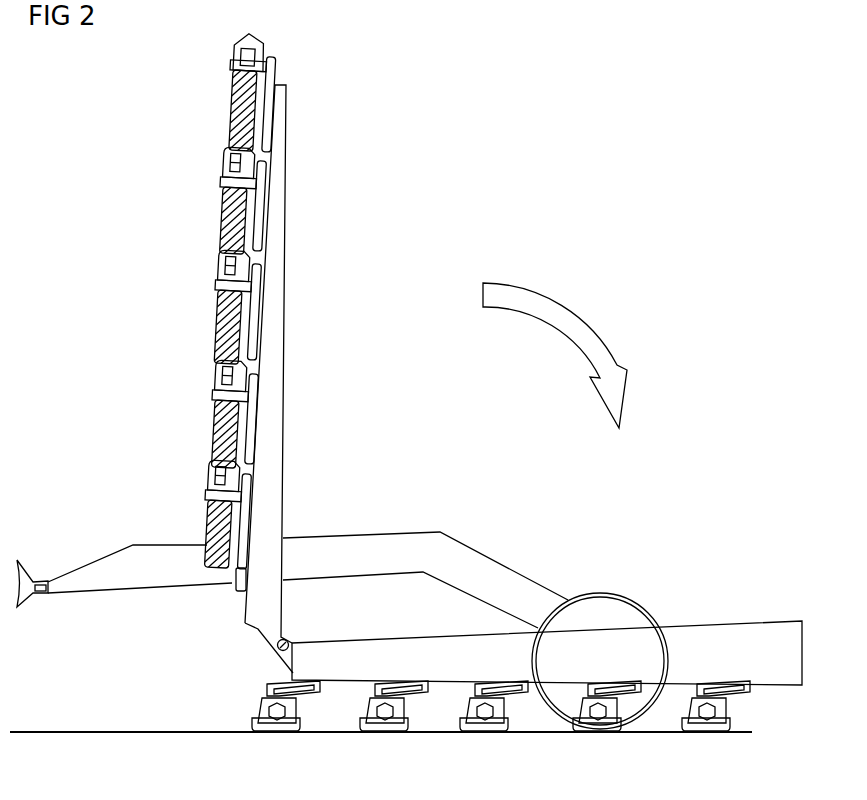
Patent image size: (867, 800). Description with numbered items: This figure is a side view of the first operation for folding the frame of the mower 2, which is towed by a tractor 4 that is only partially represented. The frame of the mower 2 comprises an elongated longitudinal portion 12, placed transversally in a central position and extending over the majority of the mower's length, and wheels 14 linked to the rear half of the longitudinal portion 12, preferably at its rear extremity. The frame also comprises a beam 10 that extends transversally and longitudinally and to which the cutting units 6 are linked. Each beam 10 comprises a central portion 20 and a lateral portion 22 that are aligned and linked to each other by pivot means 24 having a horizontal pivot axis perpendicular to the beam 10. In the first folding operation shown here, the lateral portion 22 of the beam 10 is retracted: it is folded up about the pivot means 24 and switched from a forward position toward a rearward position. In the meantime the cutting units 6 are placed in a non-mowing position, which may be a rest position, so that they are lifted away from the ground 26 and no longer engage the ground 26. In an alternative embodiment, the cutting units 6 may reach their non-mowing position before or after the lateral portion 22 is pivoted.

The mower 2 is at (603, 188).
The tractor 4 is at (18, 560).
The cutting units 6 is at (272, 727).
The beam 10 is at (156, 425).
The longitudinal portion 12 is at (374, 545).
The wheels 14 is at (602, 598).
The central portion 20 is at (723, 640).
The lateral portion 22 is at (283, 243).
The pivot means 24 is at (277, 648).
The ground 26 is at (92, 730).